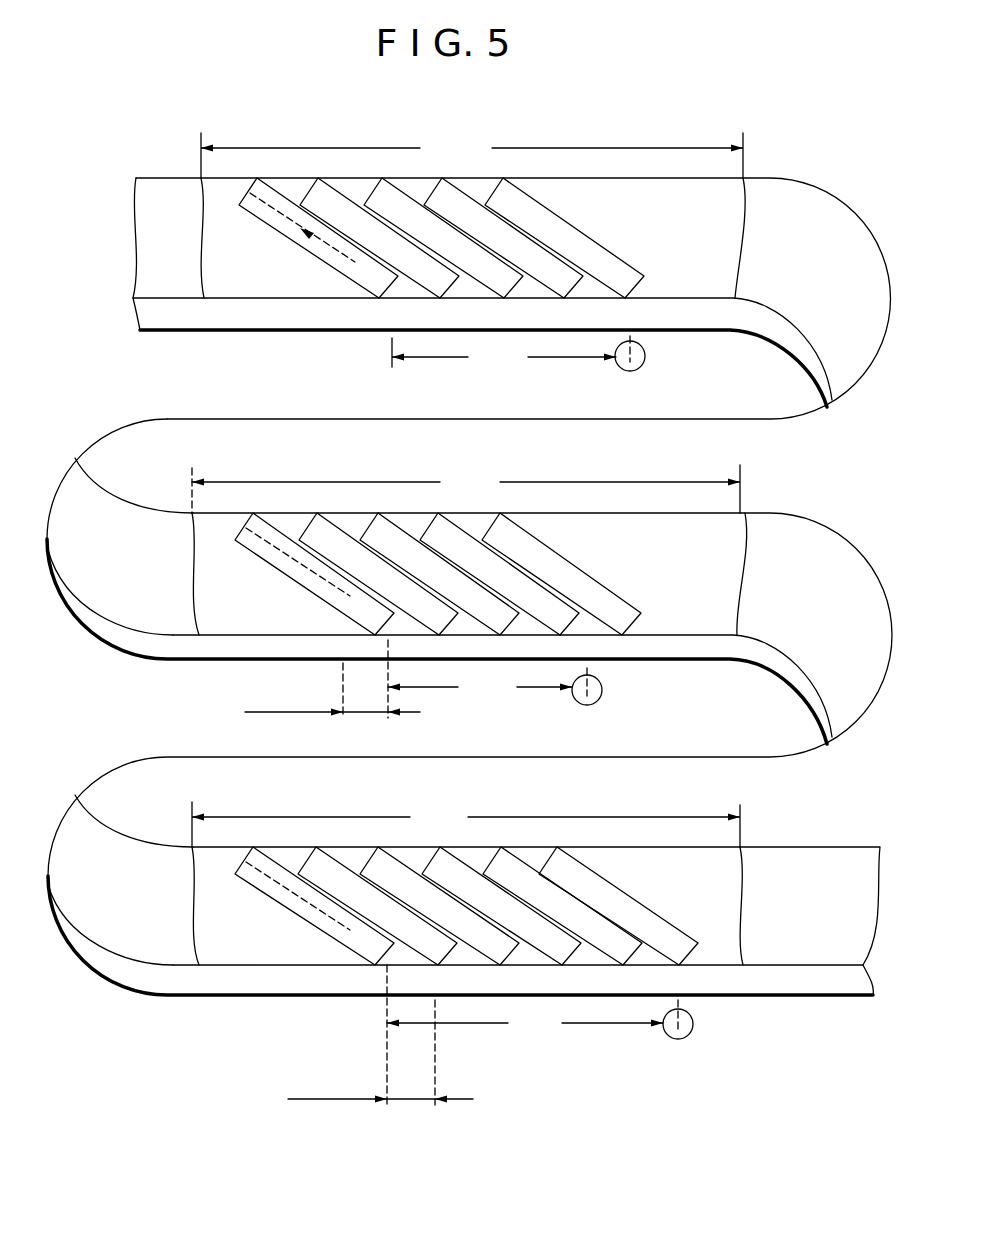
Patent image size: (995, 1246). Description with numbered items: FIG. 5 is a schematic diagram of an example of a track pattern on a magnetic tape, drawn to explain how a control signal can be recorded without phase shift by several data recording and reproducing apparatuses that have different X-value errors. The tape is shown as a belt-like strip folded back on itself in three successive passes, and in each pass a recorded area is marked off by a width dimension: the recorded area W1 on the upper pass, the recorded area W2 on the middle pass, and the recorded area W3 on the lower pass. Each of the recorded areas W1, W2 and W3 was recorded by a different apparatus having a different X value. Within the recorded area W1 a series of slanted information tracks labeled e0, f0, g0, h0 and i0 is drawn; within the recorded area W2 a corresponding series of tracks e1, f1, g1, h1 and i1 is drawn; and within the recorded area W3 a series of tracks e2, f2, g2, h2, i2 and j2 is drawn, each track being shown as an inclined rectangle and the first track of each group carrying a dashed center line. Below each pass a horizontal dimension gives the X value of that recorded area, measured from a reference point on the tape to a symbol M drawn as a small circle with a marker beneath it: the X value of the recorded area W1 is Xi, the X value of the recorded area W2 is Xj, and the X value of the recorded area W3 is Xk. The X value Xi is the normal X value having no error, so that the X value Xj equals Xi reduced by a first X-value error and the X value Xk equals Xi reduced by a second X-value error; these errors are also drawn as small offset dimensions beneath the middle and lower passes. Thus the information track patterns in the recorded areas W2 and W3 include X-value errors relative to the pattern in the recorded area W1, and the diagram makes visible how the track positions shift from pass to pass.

The print head block e, first pass e0 is at (318, 238).
The print head block f, first pass f0 is at (379, 238).
The print head block g, first pass g0 is at (443, 238).
The print head block h, first pass h0 is at (503, 238).
The print head block i, first pass i0 is at (564, 238).
The block e, second pass e1 is at (314, 574).
The block f, second pass f1 is at (378, 574).
The block g, second pass g1 is at (439, 574).
The block h, second pass h1 is at (499, 574).
The block i, second pass i1 is at (561, 574).
The block e, third pass e2 is at (314, 906).
The block f, third pass f2 is at (377, 906).
The block g, third pass g2 is at (439, 906).
The block h, third pass h2 is at (501, 906).
The block i, third pass i2 is at (562, 906).
The block j, third pass j2 is at (618, 906).
The recorded area W1 is at (472, 155).
The recorded area W2 is at (466, 489).
The recorded area W3 is at (466, 824).
The normal X value Xi is at (504, 355).
The X value Xj is at (480, 679).
The X value Xk is at (525, 1035).
The motor M is at (632, 699).